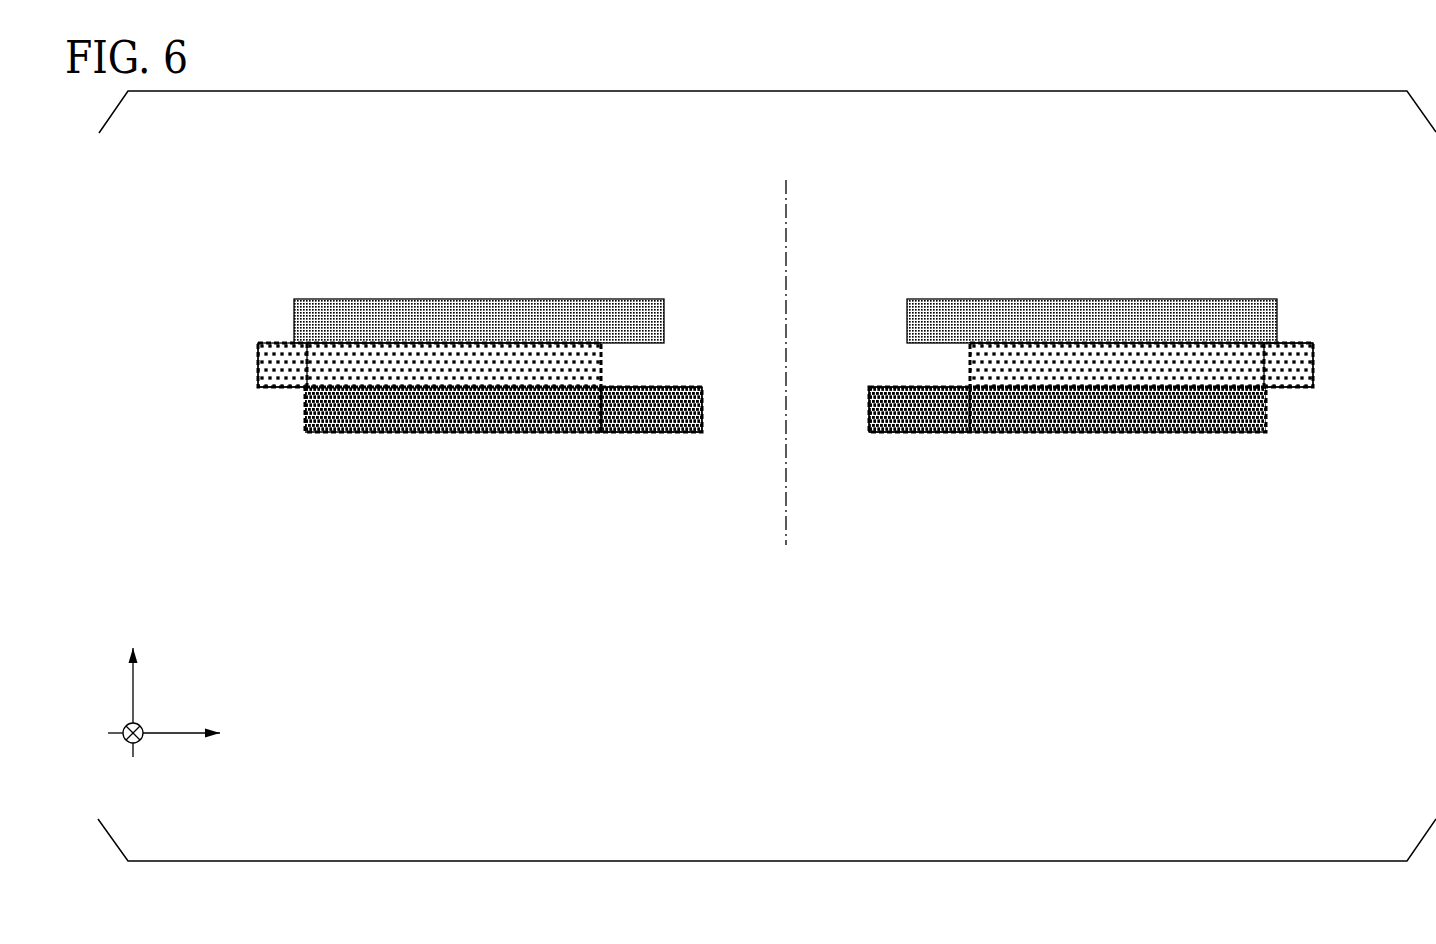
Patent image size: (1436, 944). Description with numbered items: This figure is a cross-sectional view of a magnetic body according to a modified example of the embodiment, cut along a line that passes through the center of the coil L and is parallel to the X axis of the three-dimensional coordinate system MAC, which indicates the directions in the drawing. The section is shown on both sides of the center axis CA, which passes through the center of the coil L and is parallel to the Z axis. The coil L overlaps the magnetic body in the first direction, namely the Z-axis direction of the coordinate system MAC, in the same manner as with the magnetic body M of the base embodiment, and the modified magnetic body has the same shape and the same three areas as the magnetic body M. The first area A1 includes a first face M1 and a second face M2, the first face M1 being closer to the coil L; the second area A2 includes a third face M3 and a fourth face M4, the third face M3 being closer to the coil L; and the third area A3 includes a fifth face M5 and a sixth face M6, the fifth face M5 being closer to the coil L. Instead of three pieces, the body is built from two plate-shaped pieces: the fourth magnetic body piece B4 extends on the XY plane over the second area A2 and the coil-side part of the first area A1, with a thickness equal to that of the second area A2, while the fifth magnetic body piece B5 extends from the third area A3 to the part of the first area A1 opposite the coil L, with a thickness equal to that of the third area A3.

The coil L is at (437, 298).
The magnetic body M is at (403, 449).
The first face M1 is at (531, 342).
The second face M2 is at (272, 342).
The third face M3 is at (1299, 342).
The fourth face M4 is at (283, 392).
The fifth face M5 is at (660, 386).
The sixth face M6 is at (672, 433).
The first area A1 is at (336, 433).
The second area A2 is at (258, 356).
The third area A3 is at (700, 387).
The fourth magnetic body piece B4 is at (284, 373).
The fifth magnetic body piece B5 is at (655, 411).
The center axis CA is at (788, 203).
The three-dimensional coordinate system MAC is at (152, 713).